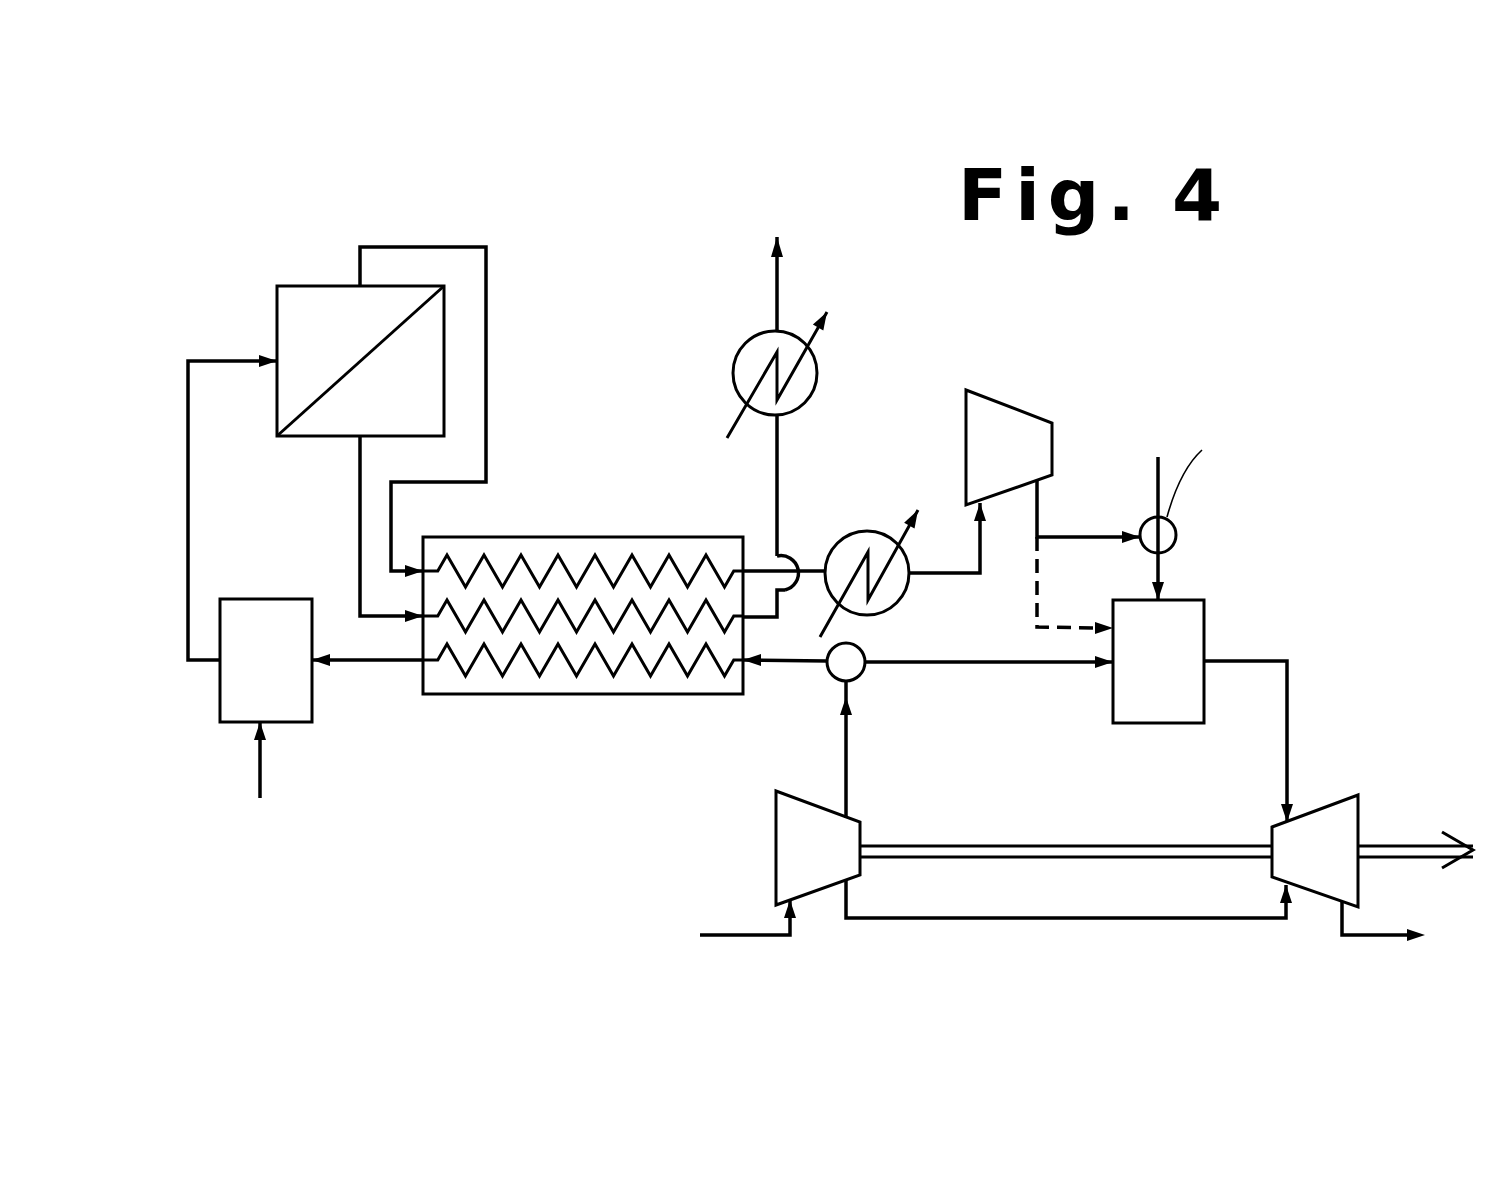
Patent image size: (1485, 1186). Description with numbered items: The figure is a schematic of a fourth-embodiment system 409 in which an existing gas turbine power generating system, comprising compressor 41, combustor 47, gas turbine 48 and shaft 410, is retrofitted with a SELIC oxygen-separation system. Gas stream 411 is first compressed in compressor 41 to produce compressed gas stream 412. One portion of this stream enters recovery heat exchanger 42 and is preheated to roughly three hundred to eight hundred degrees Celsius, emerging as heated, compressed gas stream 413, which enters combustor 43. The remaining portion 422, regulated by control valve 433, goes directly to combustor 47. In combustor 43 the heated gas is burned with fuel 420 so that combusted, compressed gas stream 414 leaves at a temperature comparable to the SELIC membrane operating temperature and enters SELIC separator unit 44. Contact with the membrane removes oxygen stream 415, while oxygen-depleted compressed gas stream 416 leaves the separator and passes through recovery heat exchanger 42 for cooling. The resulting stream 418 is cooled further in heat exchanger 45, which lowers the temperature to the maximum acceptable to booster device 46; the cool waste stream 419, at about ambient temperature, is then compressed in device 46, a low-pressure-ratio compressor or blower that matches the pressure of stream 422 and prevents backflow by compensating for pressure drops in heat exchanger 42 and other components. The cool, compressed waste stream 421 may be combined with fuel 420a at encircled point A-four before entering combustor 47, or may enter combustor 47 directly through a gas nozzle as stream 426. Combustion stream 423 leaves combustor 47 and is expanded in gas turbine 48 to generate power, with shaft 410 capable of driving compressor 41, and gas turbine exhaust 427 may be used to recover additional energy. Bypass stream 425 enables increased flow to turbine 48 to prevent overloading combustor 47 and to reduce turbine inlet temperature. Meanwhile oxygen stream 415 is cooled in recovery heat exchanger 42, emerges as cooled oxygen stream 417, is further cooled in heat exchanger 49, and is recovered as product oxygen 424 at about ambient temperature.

The system 409 is at (1020, 380).
The compressor 41 is at (828, 866).
The recovery heat exchanger 42 is at (535, 694).
The combustor 43 is at (277, 671).
The SELIC separator unit 44 is at (347, 347).
The heat exchanger 45 is at (860, 530).
The booster device 46 is at (1023, 465).
The combustor 47 is at (1171, 677).
The gas turbine 48 is at (1333, 867).
The heat exchanger 49 is at (817, 373).
The shaft 410 is at (1095, 843).
The gas stream 411 is at (753, 932).
The compressed gas stream 412 is at (846, 760).
The heated, compressed gas stream 413 is at (357, 662).
The combusted, compressed gas stream 414 is at (188, 443).
The oxygen stream 415 is at (360, 493).
The oxygen-depleted compressed gas stream 416 is at (388, 247).
The cooled oxygen stream 417 is at (777, 450).
The stream 418 is at (767, 565).
The cool waste stream 419 is at (958, 575).
The fuel 420 is at (260, 757).
The fuel 420a is at (1160, 572).
The cool, compressed waste stream 421 is at (1037, 503).
The remaining portion of compressed gas stream 422 is at (940, 665).
The combustion stream 423 is at (1255, 663).
The product oxygen 424 is at (777, 283).
The bypass stream 425 is at (990, 917).
The stream 426 is at (1035, 610).
The gas turbine exhaust 427 is at (1368, 933).
The control valve 433 is at (825, 675).